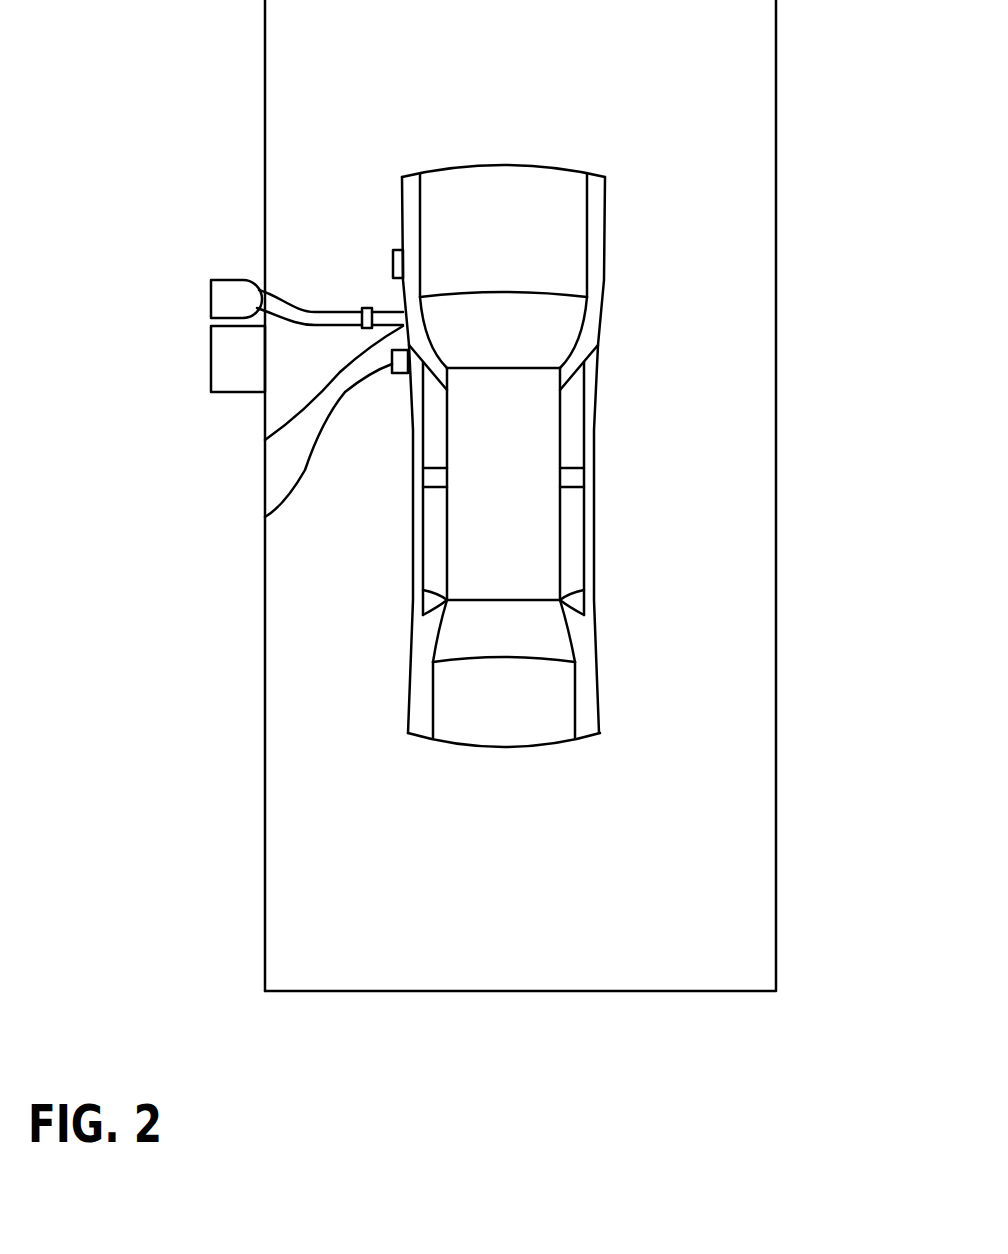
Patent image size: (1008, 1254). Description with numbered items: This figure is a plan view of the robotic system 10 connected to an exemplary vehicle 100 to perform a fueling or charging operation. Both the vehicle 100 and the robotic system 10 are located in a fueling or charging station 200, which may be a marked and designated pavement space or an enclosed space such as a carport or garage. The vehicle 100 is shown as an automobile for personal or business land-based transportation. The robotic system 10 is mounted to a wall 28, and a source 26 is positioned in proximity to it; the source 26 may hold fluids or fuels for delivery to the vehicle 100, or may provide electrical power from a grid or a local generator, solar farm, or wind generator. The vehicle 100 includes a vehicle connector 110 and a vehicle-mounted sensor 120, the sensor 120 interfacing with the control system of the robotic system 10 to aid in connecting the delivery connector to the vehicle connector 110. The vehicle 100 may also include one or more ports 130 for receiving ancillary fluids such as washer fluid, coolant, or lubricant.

The robotic system 10 is at (203, 297).
The source 26 is at (227, 361).
The wall 28 is at (263, 244).
The vehicle 100 is at (623, 250).
The vehicle connector 110 is at (265, 440).
The vehicle-mounted sensor 120 is at (393, 257).
The port 130 is at (265, 517).
The fueling or charging station 200 is at (723, 588).